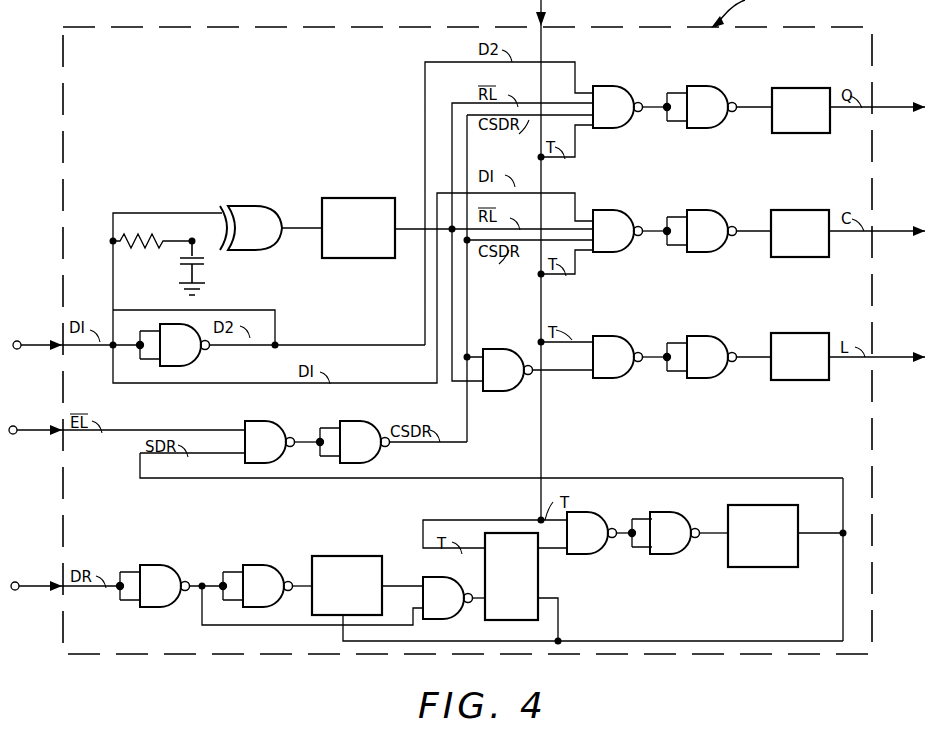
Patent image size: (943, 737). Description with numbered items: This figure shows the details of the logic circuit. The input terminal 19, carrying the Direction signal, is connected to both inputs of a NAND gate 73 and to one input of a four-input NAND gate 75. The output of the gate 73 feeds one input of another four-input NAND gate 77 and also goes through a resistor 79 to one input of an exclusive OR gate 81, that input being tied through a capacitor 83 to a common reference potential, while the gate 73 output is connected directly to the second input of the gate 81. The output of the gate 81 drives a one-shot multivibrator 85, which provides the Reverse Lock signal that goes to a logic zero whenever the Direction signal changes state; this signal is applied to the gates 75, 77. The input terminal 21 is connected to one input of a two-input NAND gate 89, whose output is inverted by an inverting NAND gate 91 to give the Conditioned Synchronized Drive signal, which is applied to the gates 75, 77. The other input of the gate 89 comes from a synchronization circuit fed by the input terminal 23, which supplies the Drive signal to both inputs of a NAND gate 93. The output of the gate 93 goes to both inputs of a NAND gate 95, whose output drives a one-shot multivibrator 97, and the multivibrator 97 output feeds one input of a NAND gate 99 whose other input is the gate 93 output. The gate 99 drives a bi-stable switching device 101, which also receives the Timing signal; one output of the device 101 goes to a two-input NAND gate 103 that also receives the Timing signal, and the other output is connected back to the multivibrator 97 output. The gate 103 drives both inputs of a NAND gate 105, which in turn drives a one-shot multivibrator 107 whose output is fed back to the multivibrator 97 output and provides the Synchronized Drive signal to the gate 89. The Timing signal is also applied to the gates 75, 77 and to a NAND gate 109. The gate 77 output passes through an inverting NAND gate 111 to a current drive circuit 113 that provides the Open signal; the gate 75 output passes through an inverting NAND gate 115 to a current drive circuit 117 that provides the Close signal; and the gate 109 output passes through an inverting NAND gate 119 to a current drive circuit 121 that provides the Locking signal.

The input terminal 19 is at (19, 340).
The input terminal 21 is at (13, 436).
The input terminal 23 is at (15, 590).
The NAND gate 73 is at (182, 352).
The four-input NAND gate 75 is at (622, 224).
The four-input NAND gate 77 is at (620, 100).
The resistor 79 is at (150, 246).
The exclusive OR gate 81 is at (253, 218).
The capacitor 83 is at (207, 260).
The one-shot multivibrator 85 is at (367, 198).
The two-input NAND gate 89 is at (274, 430).
The inverting NAND gate 91 is at (358, 430).
The NAND gate 93 is at (168, 572).
The NAND gate 95 is at (262, 572).
The one-shot multivibrator 97 is at (342, 556).
The NAND gate 99 is at (432, 582).
The bi-stable switching device 101 is at (495, 582).
The two-input NAND gate 103 is at (596, 528).
The NAND gate 105 is at (670, 528).
The one-shot multivibrator 107 is at (759, 566).
The NAND gate 109 is at (622, 348).
The inverting NAND gate 111 is at (718, 100).
The current drive circuit 113 is at (848, 110).
The inverting NAND gate 115 is at (718, 224).
The current drive circuit 117 is at (848, 233).
The inverting NAND gate 119 is at (718, 348).
The current drive circuit 121 is at (848, 356).